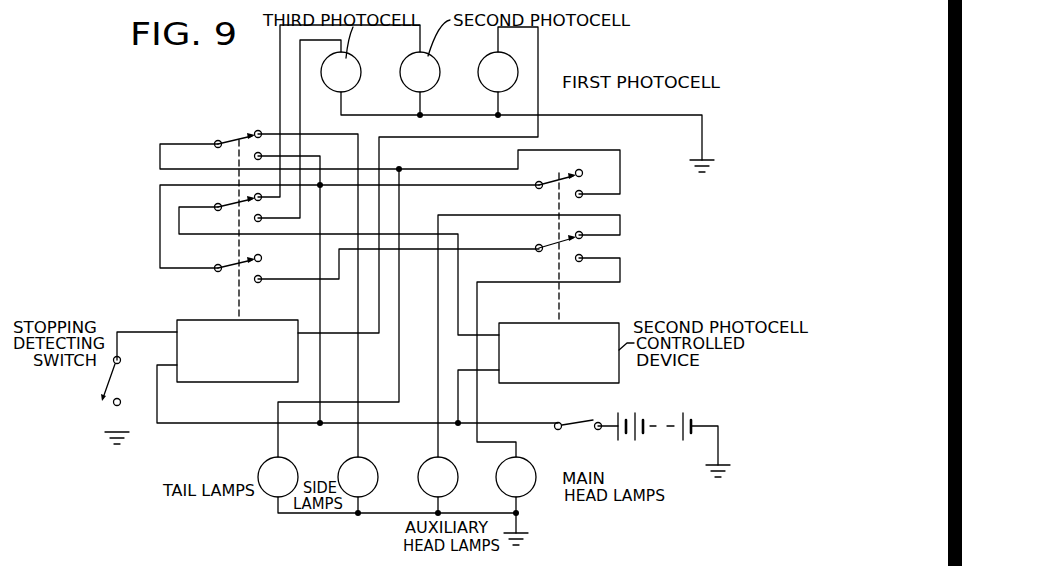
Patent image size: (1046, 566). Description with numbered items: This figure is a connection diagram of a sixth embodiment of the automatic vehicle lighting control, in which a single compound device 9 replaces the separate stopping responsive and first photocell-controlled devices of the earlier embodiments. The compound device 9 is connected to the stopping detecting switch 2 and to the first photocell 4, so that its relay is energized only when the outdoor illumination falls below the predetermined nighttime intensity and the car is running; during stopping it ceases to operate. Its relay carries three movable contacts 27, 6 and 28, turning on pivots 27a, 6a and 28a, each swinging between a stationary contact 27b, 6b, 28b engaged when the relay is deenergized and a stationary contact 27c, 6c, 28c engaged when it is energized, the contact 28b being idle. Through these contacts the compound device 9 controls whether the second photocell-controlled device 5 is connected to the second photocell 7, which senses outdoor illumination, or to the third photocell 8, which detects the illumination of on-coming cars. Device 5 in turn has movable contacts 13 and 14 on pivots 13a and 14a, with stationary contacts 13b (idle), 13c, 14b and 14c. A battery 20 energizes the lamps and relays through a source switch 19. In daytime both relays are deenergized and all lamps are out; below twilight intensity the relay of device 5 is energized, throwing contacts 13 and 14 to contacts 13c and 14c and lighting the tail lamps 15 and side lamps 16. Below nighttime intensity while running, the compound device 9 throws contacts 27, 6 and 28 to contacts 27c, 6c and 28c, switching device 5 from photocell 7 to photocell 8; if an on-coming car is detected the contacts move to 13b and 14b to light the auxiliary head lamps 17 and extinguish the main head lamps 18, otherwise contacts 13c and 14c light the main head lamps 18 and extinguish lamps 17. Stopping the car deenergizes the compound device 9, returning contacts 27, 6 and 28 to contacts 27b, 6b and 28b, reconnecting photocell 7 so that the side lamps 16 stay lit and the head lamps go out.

The stopping detecting switch 2 is at (112, 376).
The first photocell 4 is at (518, 75).
The second photocell-controlled device 5 is at (537, 383).
The movable contact 6 is at (232, 205).
The pivot 6a is at (210, 216).
The stationary contact 6b is at (268, 206).
The stationary contact 6c is at (245, 219).
The second photocell 7 is at (440, 74).
The third photocell 8 is at (361, 75).
The compound device 9 is at (207, 382).
The movable contact 13 is at (560, 178).
The pivot 13a is at (540, 189).
The stationary contact 13b is at (581, 170).
The stationary contact 13c is at (581, 191).
The movable contact 14 is at (560, 242).
The pivot 14a is at (540, 252).
The stationary contact 14b is at (581, 232).
The stationary contact 14c is at (580, 262).
The tail lamps 15 is at (258, 475).
The side lamps 16 is at (338, 478).
The auxiliary head lamps 17 is at (415, 497).
The main head lamps 18 is at (536, 477).
The source switch 19 is at (580, 421).
The battery 20 is at (661, 423).
The movable contact 27 is at (236, 141).
The pivot 27a is at (208, 153).
The stationary contact 27b is at (259, 126).
The stationary contact 27c is at (261, 153).
The movable contact 28 is at (235, 261).
The pivot 28a is at (219, 272).
The stationary contact 28b is at (264, 249).
The stationary contact 28c is at (259, 283).